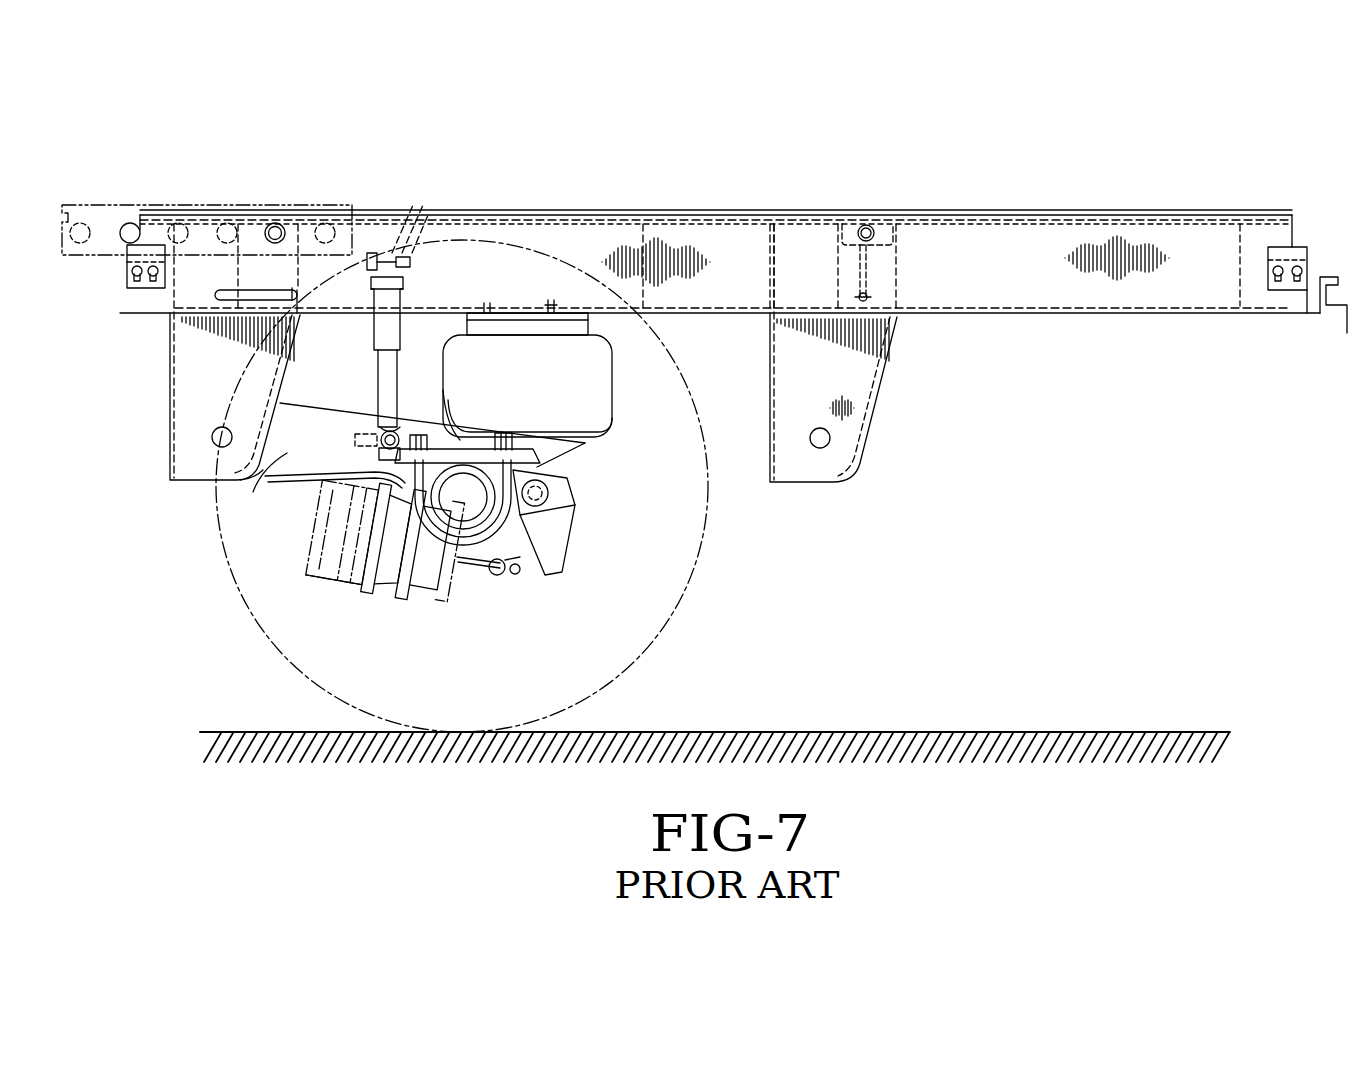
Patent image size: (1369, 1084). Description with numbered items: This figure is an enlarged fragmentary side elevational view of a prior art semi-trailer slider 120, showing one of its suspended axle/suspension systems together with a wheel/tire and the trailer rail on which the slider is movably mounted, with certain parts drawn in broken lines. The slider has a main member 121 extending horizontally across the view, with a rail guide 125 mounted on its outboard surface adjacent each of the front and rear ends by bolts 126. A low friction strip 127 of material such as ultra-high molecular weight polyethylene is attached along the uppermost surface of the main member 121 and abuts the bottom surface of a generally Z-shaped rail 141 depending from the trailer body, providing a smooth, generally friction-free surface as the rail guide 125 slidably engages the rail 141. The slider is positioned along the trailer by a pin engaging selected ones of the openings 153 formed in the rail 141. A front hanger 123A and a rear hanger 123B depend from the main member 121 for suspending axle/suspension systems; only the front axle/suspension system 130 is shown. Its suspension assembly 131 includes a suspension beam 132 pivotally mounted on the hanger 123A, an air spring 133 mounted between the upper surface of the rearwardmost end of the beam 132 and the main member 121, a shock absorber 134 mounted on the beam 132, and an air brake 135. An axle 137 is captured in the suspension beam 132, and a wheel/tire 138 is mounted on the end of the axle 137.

The semi-trailer slider 120 is at (729, 182).
The main member 121 is at (1156, 316).
The front hanger 123A is at (175, 433).
The rear hanger 123B is at (876, 395).
The rail guide 125 is at (147, 288).
The bolt 126 is at (132, 268).
The low friction strip 127 is at (553, 210).
The front axle/suspension system 130 is at (578, 455).
The suspension assembly 131 is at (265, 475).
The suspension beam 132 is at (300, 453).
The air spring 133 is at (555, 390).
The shock absorber 134 is at (388, 372).
The air brake 135 is at (330, 545).
The axle 137 is at (462, 500).
The wheel/tire 138 is at (684, 612).
The rail 141 is at (115, 205).
The opening 153 is at (75, 205).